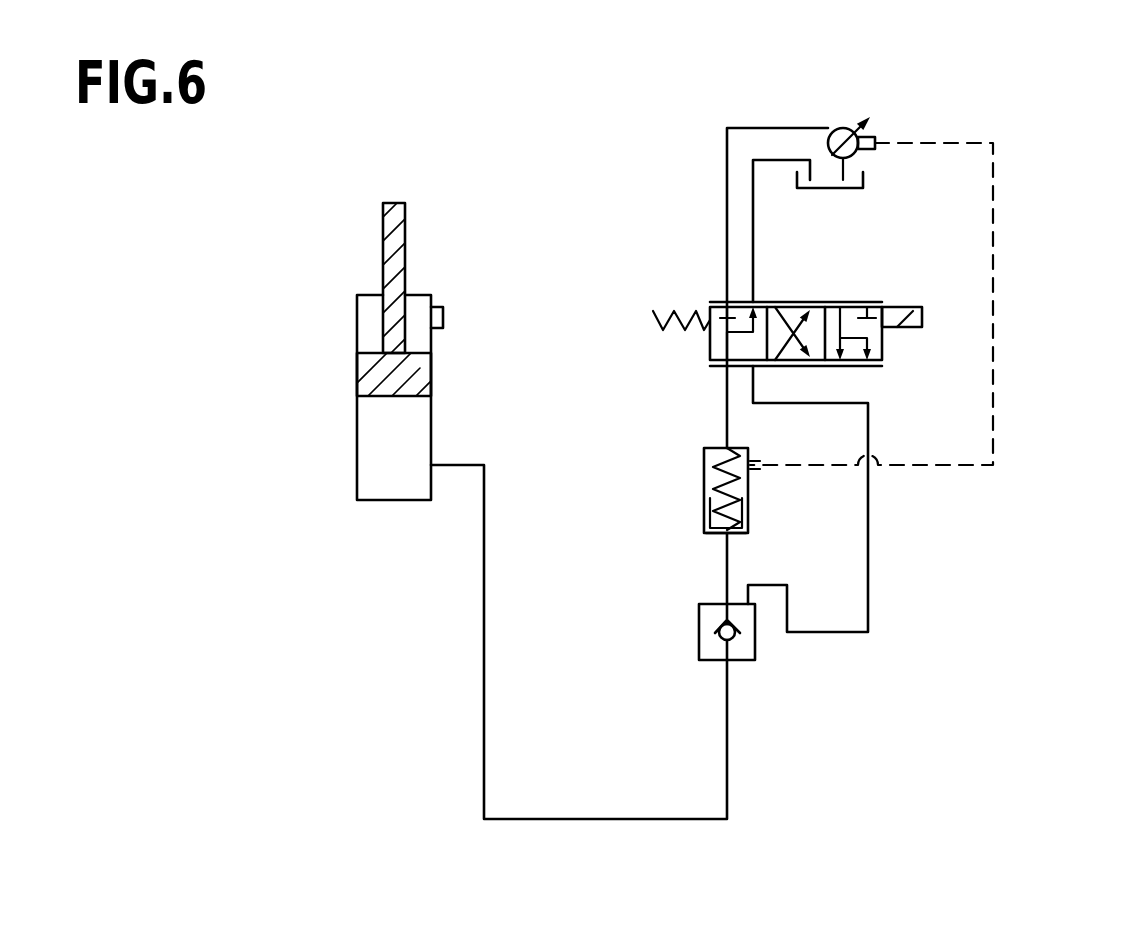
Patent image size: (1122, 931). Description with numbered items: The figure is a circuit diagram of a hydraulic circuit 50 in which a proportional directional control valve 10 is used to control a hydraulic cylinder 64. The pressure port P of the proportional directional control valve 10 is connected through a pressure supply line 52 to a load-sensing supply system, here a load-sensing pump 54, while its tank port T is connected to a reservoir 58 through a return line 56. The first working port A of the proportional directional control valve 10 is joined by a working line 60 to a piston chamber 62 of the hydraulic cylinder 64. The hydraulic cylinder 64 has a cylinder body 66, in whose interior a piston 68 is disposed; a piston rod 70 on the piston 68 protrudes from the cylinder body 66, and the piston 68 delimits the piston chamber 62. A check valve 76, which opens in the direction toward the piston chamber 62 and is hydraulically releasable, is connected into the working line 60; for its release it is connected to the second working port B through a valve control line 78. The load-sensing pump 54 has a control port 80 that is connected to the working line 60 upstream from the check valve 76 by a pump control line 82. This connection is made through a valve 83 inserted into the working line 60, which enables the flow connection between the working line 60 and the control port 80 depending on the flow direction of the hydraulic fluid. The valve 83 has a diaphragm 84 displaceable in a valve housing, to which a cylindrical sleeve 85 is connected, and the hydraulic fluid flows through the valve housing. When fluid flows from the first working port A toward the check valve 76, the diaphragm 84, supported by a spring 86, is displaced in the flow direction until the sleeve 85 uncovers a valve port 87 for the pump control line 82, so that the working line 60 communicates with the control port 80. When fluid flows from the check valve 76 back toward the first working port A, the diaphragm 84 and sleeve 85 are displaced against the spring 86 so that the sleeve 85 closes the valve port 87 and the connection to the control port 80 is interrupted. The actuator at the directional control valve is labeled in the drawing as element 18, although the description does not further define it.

The proportional directional control valve 10 is at (707, 347).
The solenoid actuator 18 is at (907, 325).
The hydraulic circuit 50 is at (1027, 147).
The pressure supply line 52 is at (725, 200).
The load-sensing pump 54 is at (843, 140).
The return line 56 is at (753, 205).
The reservoir 58 is at (850, 188).
The working line 60 is at (727, 740).
The piston chamber 62 is at (387, 473).
The hydraulic cylinder 64 is at (453, 300).
The cylinder body 66 is at (432, 443).
The piston 68 is at (418, 380).
The piston rod 70 is at (395, 250).
The check valve 76 is at (698, 647).
The valve control line 78 is at (868, 593).
The control port 80 is at (878, 143).
The pump control line 82 is at (975, 467).
The valve 83 is at (698, 463).
The diaphragm 84 is at (737, 537).
The cylindrical sleeve 85 is at (748, 510).
The spring 86 is at (703, 482).
The valve port 87 is at (752, 462).